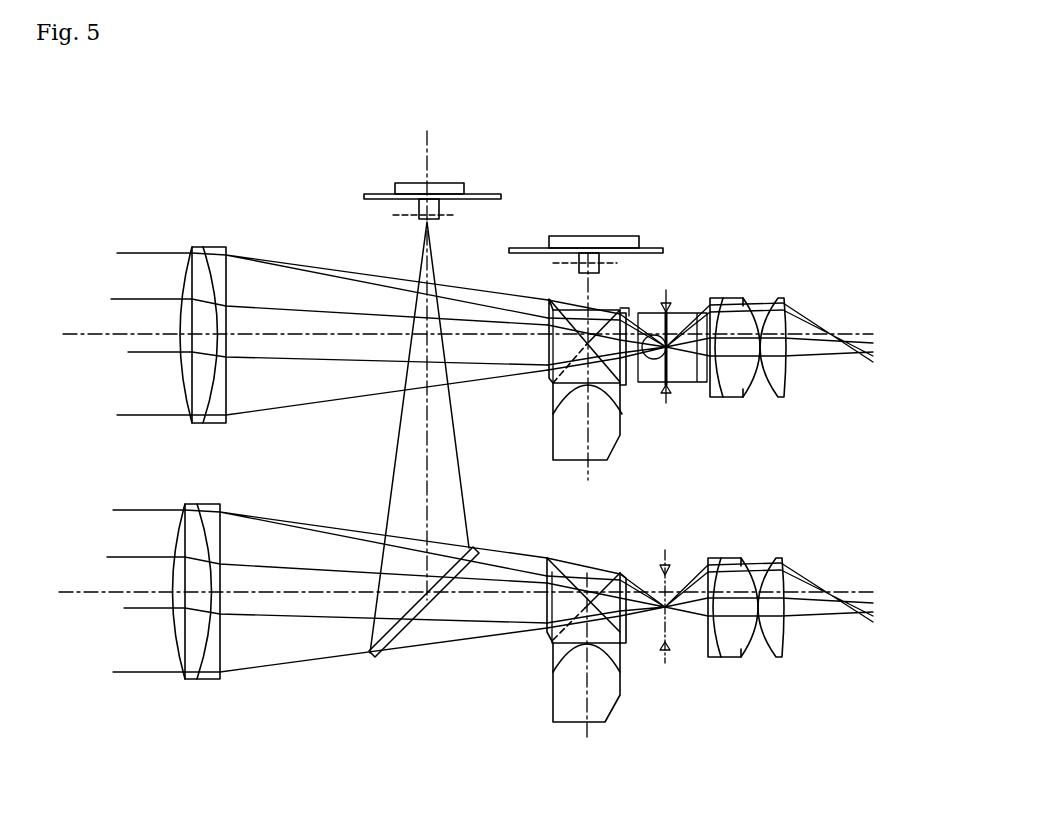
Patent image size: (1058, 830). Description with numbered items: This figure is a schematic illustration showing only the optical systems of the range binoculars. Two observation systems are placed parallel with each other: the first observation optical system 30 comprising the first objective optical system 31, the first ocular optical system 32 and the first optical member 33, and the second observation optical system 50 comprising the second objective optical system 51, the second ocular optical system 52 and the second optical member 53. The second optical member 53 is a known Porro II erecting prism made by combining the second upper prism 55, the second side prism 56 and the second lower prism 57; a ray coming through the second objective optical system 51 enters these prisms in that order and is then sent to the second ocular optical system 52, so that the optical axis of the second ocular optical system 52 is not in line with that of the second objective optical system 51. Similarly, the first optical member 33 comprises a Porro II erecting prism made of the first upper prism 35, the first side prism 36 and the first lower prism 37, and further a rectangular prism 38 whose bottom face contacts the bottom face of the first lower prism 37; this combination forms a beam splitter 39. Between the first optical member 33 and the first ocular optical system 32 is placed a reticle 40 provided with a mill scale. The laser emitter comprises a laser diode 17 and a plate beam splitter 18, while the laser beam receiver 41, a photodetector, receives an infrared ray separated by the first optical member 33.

The laser diode 17 is at (457, 183).
The plate beam splitter 18 is at (388, 652).
The first observation optical system 30 is at (78, 277).
The first objective optical system 31 is at (207, 247).
The first ocular optical system 32 is at (757, 292).
The first optical member 33 is at (599, 385).
The first upper prism 35 is at (551, 376).
The first side prism 36 is at (568, 455).
The first lower prism 37 is at (627, 362).
The rectangular prism 38 is at (608, 312).
The beam splitter 39 is at (628, 306).
The reticle 40 is at (677, 388).
The laser beam receiver 41 is at (627, 236).
The second observation optical system 50 is at (80, 535).
The second objective optical system 51 is at (210, 680).
The second ocular optical system 52 is at (757, 668).
The second optical member 53 is at (585, 678).
The second upper prism 55 is at (547, 636).
The second side prism 56 is at (567, 718).
The second lower prism 57 is at (622, 622).